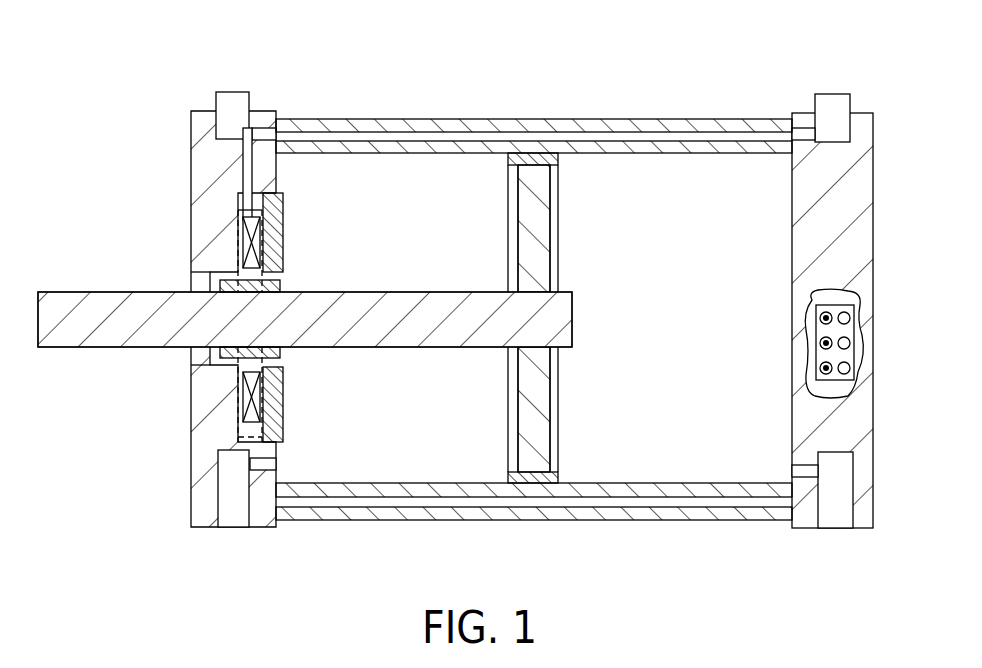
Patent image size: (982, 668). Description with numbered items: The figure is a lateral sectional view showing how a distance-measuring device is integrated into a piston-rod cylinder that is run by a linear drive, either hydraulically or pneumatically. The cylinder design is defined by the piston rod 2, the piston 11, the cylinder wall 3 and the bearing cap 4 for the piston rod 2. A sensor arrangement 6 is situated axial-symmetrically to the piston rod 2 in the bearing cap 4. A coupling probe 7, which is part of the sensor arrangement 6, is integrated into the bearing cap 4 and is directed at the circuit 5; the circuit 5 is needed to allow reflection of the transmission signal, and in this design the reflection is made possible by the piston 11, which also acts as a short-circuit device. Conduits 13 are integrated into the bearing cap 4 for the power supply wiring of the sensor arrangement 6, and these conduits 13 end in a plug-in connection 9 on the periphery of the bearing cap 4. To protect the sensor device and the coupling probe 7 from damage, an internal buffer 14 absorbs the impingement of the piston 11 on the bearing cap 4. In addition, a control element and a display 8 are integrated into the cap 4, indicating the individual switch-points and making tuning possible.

The piston rod 2 is at (143, 348).
The cylinder wall 3 is at (596, 119).
The bearing cap 4 is at (190, 486).
The circuit 5 is at (412, 495).
The sensor arrangement 6 is at (240, 226).
The coupling probe 7 is at (243, 393).
The display 8 is at (856, 322).
The plug-in connection 9 is at (233, 91).
The piston 11 is at (556, 401).
The conduits 13 is at (253, 169).
The internal buffer 14 is at (284, 398).